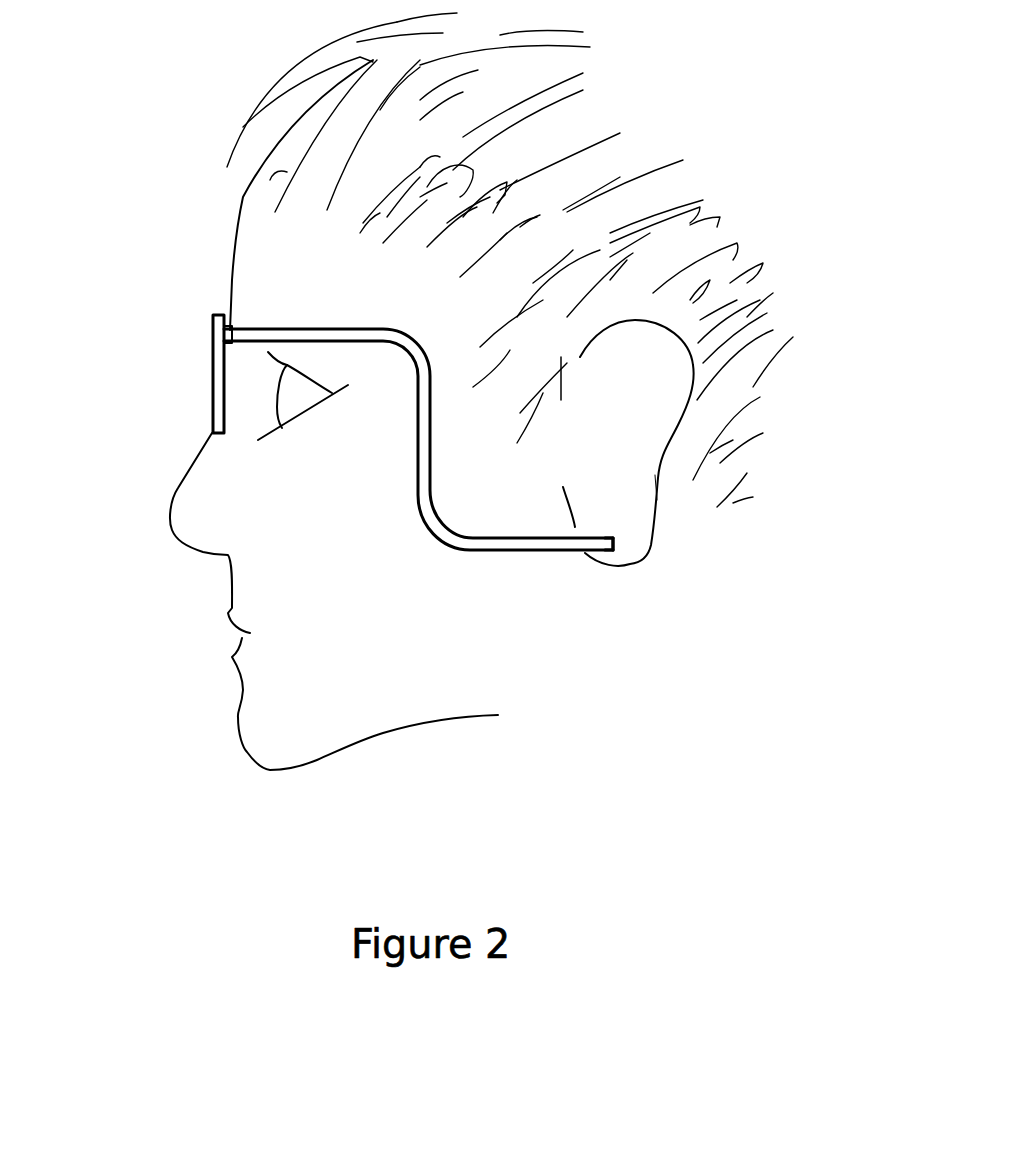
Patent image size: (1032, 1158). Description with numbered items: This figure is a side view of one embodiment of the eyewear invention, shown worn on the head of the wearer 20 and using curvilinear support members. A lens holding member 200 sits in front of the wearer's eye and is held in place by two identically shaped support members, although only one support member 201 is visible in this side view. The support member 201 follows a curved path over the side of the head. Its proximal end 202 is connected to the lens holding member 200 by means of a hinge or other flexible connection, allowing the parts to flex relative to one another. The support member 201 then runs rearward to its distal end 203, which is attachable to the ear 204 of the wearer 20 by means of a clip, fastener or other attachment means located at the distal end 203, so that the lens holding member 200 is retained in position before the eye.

The wearer 20 is at (392, 703).
The lens holding member 200 is at (215, 363).
The support member 201 is at (420, 420).
The proximal end 202 is at (230, 328).
The distal end 203 is at (613, 543).
The ear 204 is at (642, 482).